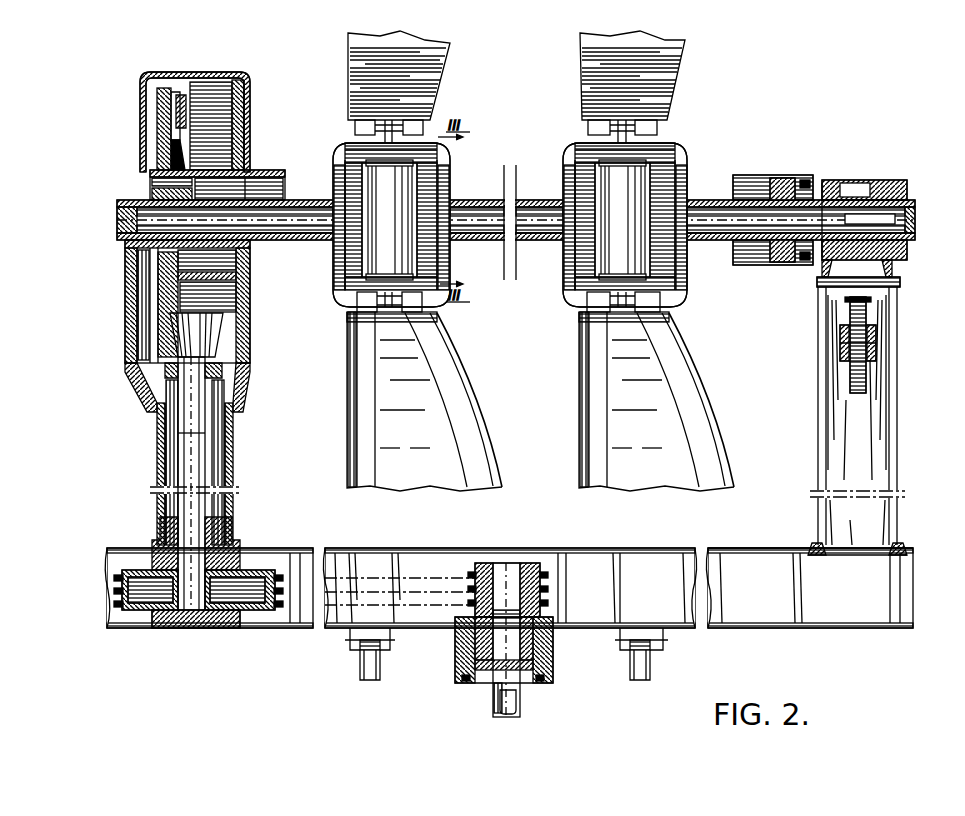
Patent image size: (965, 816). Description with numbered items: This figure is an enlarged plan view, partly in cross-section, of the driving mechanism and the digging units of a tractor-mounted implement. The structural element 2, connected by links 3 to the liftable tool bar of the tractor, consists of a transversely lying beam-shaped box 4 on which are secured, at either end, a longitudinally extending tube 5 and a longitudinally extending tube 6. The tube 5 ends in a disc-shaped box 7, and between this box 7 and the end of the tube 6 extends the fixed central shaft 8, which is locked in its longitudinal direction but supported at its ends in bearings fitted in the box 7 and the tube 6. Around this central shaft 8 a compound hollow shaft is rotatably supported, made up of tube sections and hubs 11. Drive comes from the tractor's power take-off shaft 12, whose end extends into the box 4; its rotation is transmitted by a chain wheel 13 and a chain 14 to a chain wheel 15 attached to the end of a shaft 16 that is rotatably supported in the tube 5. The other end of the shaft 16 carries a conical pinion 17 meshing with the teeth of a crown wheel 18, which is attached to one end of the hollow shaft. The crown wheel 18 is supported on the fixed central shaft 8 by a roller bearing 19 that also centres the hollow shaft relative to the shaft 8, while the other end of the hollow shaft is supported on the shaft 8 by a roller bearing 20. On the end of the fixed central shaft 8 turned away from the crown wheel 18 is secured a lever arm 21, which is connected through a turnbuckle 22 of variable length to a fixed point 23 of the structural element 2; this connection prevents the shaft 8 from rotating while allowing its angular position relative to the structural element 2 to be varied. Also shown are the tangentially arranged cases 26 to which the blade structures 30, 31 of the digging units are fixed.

The structural element 2 is at (568, 548).
The links 3 is at (380, 672).
The beam-shaped box 4 is at (634, 548).
The longitudinally extending tube 5 is at (233, 428).
The longitudinally extending tube 6 is at (897, 445).
The disc-shaped box 7 is at (246, 93).
The fixed central shaft 8 is at (283, 200).
The hubs 11 is at (352, 146).
The power take-off shaft 12 is at (520, 702).
The chain wheel 13 is at (488, 563).
The chain 14 is at (378, 605).
The chain wheel 15 is at (262, 570).
The shaft 16 is at (197, 453).
The conical pinion 17 is at (145, 323).
The crown wheel 18 is at (150, 300).
The roller bearing 19 is at (248, 172).
The roller bearing 20 is at (753, 177).
The lever arm 21 is at (840, 182).
The turnbuckle 22 is at (876, 318).
The fixed point 23 is at (876, 342).
The cases 26 is at (385, 262).
The blade structure 30 is at (336, 150).
The blade structure 31 is at (425, 100).